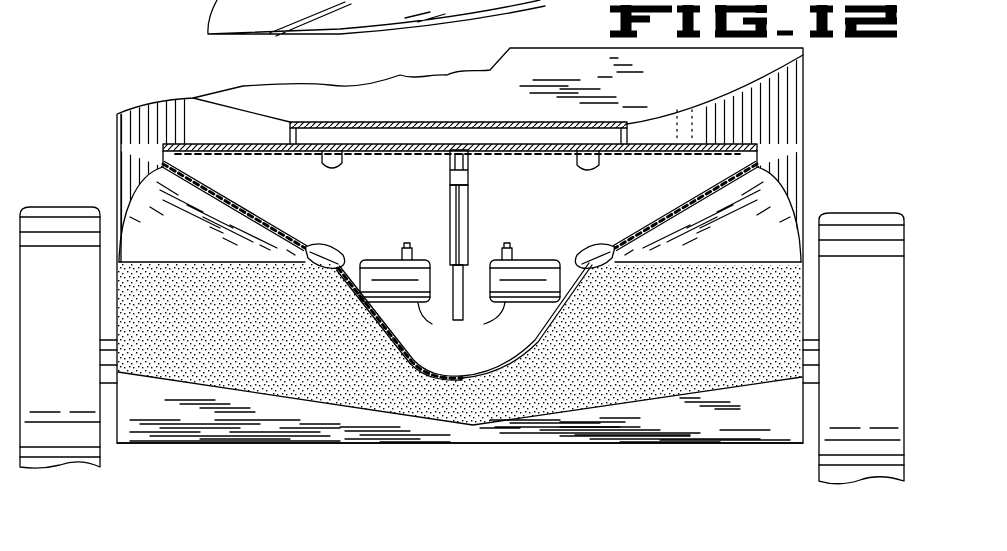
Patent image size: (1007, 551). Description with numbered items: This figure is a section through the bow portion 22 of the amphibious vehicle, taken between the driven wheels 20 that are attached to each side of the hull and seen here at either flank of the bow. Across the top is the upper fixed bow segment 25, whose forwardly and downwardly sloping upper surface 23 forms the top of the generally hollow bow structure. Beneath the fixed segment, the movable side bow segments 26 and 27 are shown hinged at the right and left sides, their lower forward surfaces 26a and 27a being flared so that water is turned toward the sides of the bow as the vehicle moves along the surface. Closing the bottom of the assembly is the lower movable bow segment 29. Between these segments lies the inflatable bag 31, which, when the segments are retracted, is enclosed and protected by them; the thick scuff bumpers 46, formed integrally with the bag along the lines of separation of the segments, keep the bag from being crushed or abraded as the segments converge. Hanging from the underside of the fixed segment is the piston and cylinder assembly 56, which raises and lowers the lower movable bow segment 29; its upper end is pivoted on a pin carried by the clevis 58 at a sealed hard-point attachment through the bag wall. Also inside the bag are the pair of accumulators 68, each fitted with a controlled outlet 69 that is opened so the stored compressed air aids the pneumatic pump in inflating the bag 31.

The driven wheels 20 is at (64, 346).
The bow portion 22 is at (803, 137).
The upper surface 23 is at (706, 87).
The upper fixed bow segment 25 is at (194, 102).
The movable side bow segment 26 is at (119, 172).
The movable side bow segment 27 is at (777, 165).
The lower forward surface 26a is at (192, 254).
The lower forward surface 27a is at (786, 260).
The lower movable bow segment 29 is at (218, 440).
The inflatable bag 31 is at (479, 428).
The scuff bumpers 46 is at (309, 246).
The piston and cylinder assembly 56 is at (469, 211).
The clevis 58 is at (471, 173).
The accumulators 68 is at (461, 326).
The controlled outlet 69 is at (408, 250).